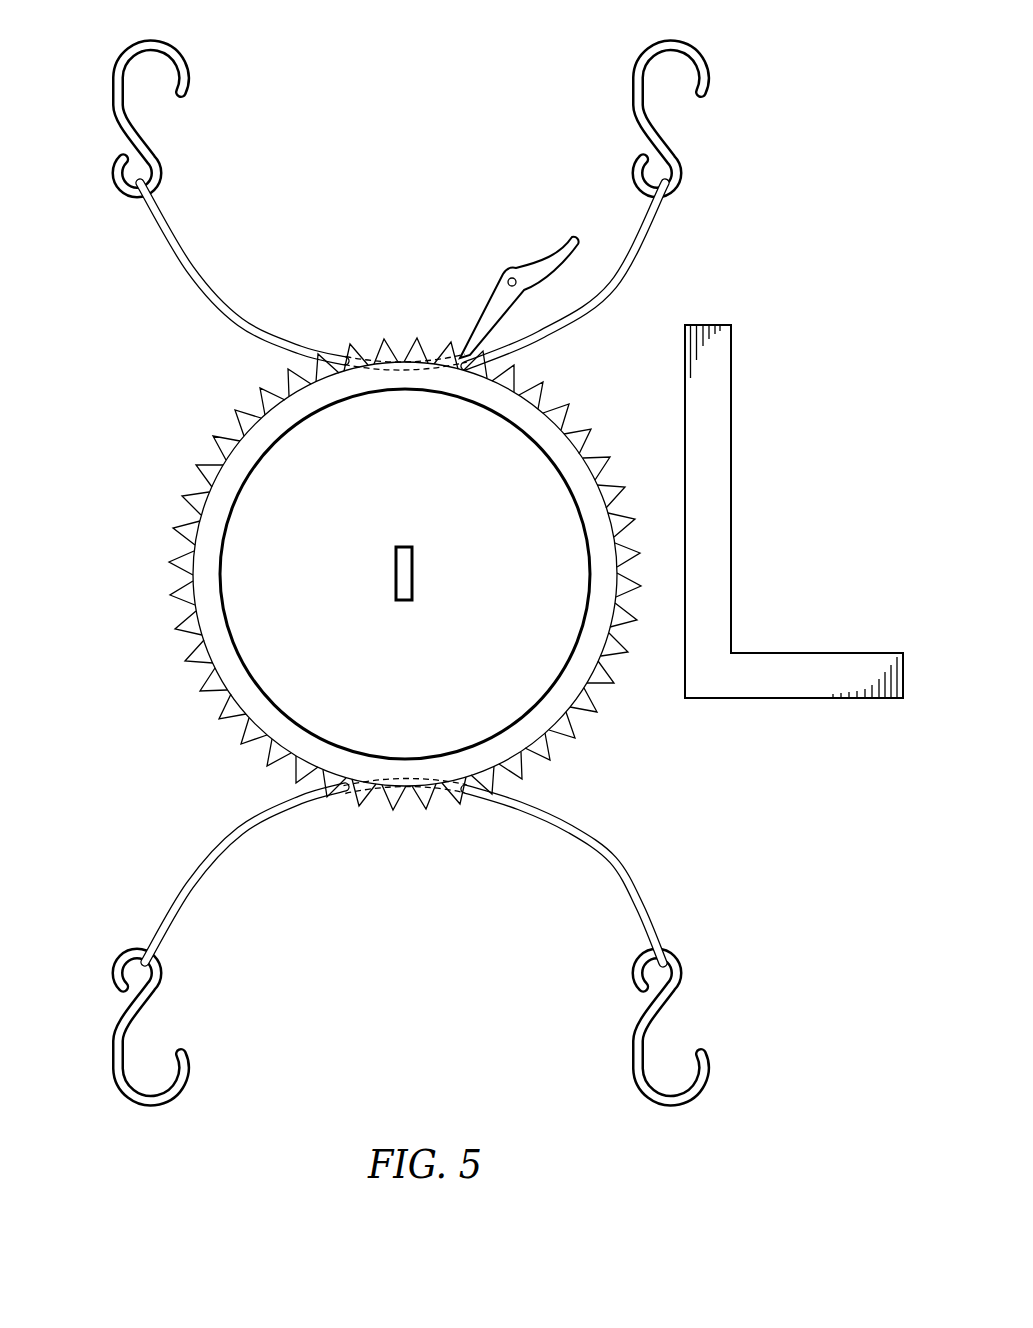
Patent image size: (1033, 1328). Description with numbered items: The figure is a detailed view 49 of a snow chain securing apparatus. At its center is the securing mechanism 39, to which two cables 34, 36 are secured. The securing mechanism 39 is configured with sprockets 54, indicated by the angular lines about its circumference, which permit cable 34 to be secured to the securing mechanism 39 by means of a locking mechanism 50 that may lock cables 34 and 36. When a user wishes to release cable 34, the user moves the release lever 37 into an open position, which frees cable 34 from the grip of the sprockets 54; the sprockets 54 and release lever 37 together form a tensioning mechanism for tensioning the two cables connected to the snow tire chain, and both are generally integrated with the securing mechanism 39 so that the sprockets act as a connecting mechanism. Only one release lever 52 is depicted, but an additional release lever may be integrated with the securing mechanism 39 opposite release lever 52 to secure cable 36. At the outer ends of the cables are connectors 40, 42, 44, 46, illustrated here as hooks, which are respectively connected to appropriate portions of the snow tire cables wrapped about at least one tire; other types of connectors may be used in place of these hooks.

The cable 34 is at (636, 262).
The cable 36 is at (612, 862).
The release lever 37 is at (731, 465).
The securing mechanism 39 is at (108, 354).
The connector 40 is at (116, 56).
The connector 42 is at (706, 48).
The connector 44 is at (122, 1090).
The connector 46 is at (712, 1082).
The detailed view 49 is at (558, 58).
The locking mechanism 50 is at (413, 578).
The release lever 52 is at (487, 310).
The sprockets 54 is at (176, 556).